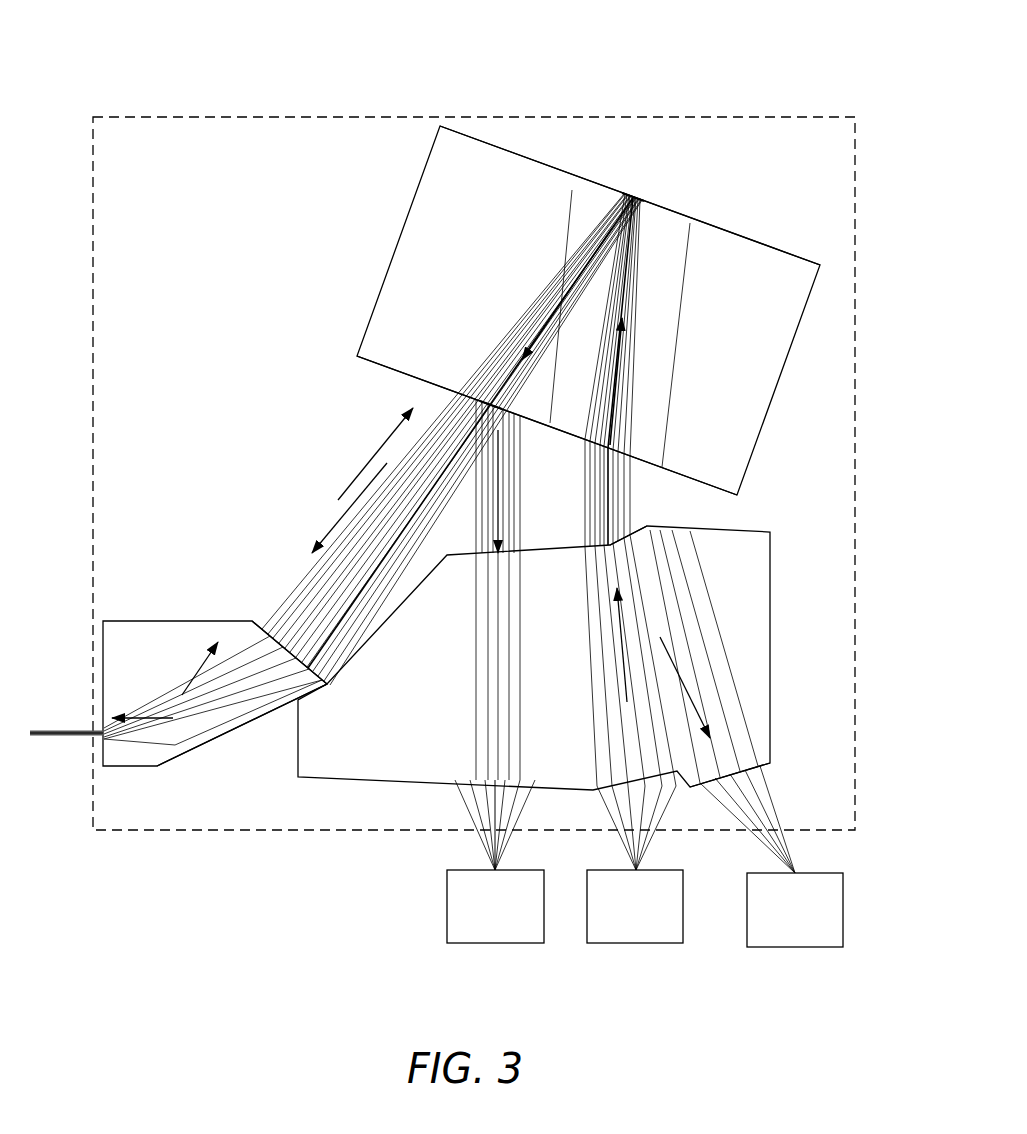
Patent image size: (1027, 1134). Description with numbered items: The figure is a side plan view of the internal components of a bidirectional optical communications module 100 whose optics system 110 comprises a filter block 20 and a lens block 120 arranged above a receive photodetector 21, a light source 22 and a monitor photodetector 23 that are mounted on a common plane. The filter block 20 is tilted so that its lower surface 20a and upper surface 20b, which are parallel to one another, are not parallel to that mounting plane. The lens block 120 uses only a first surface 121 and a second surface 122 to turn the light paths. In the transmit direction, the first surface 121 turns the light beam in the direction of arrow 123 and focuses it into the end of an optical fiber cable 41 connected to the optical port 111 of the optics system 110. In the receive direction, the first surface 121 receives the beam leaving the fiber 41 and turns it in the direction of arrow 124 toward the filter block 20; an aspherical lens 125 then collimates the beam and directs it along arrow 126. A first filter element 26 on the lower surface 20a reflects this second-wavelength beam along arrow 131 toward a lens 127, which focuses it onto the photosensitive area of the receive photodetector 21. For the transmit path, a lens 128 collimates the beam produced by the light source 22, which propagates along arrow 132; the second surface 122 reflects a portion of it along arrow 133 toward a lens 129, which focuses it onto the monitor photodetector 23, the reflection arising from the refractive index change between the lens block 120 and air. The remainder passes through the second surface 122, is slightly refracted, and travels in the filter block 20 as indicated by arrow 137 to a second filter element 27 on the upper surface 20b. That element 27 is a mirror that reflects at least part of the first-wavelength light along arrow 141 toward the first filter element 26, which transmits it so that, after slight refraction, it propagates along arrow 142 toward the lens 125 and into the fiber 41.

The bidirectional optical communications module 100 is at (112, 94).
The optics system 110 is at (734, 117).
The filter block 20 is at (414, 226).
The lower surface 20a is at (705, 465).
The upper surface 20b is at (770, 252).
The second filter element 27 is at (633, 198).
The first filter element 26 is at (496, 406).
The arrow 126 is at (370, 455).
The arrow 142 is at (332, 520).
The arrow 141 is at (540, 318).
The arrow 137 is at (618, 358).
The arrow 131 is at (505, 512).
The lens block 120 is at (735, 580).
The second surface 122 is at (610, 543).
The arrow 132 is at (616, 632).
The arrow 133 is at (680, 670).
The optical port 111 is at (100, 677).
The aspherical lens 125 is at (287, 632).
The first surface 121 is at (230, 740).
The arrow 124 is at (212, 645).
The arrow 123 is at (143, 718).
The optical fiber cable 41 is at (58, 733).
The aspherical lens 127 is at (498, 795).
The aspherical lens 128 is at (635, 793).
The aspherical lens 129 is at (742, 777).
The receive photodetector 21 is at (532, 870).
The light source 22 is at (663, 870).
The monitor photodetector 23 is at (816, 873).